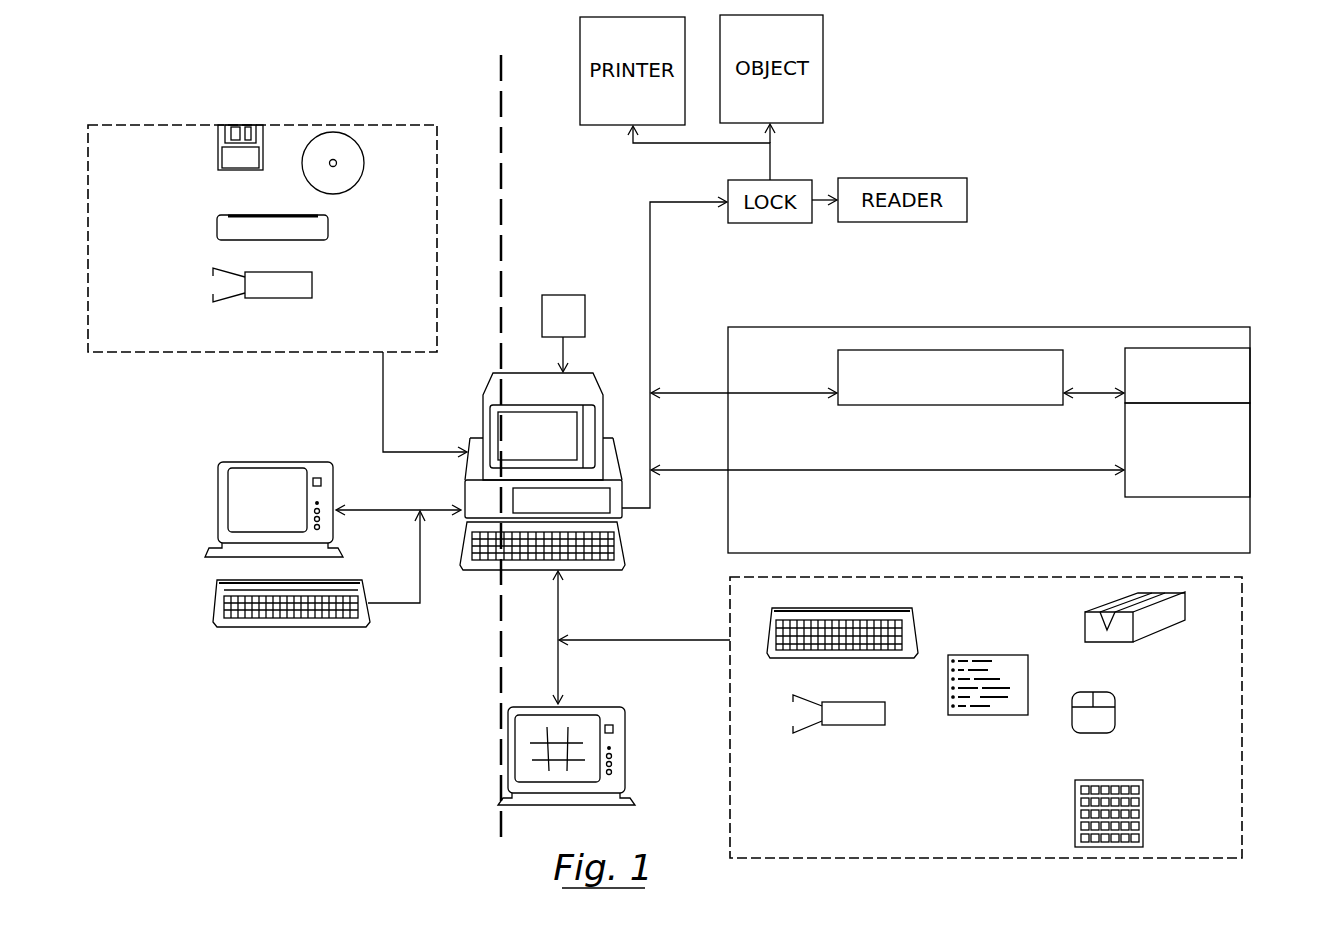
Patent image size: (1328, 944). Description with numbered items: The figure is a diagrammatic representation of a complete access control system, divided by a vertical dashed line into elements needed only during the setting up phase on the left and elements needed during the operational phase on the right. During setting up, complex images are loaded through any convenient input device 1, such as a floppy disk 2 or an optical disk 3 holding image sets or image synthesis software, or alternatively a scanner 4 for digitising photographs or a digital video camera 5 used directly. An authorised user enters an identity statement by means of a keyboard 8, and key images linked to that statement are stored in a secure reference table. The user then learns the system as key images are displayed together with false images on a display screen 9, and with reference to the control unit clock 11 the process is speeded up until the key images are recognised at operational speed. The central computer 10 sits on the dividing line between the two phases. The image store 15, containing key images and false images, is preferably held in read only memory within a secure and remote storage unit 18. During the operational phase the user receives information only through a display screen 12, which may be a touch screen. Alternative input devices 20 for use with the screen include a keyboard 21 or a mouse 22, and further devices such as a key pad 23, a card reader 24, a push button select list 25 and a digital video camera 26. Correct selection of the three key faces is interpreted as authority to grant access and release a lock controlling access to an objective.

The input device 1 is at (348, 108).
The floppy disk 2 is at (220, 153).
The optical disk (CD-ROM) 3 is at (362, 182).
The scanner 4 is at (322, 227).
The digital video camera 5 is at (307, 288).
The keyboard 8 is at (258, 623).
The display screen 9 is at (258, 460).
The computer 10 is at (462, 487).
The control unit clock 11 is at (560, 302).
The display screen 12 is at (625, 748).
The image store 15 is at (1123, 425).
The secure and remote storage unit 18 is at (1100, 327).
The input devices 20 is at (1247, 688).
The keyboard 21 is at (910, 622).
The mouse 22 is at (1110, 718).
The key pad 23 is at (1075, 808).
The card reader 24 is at (1158, 620).
The push button select list 25 is at (978, 717).
The digital video camera 26 is at (852, 727).